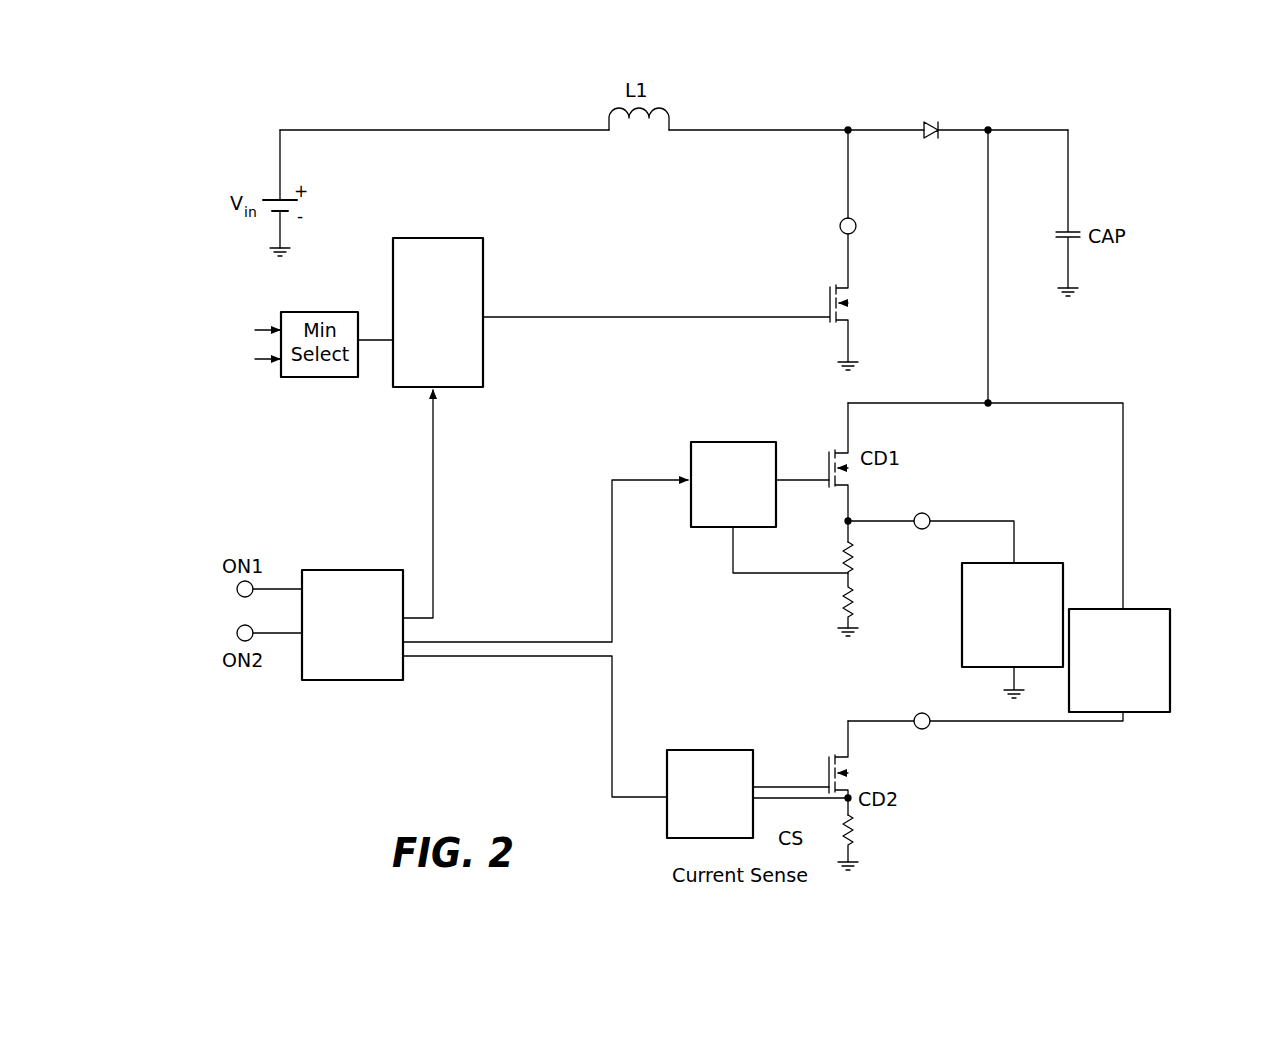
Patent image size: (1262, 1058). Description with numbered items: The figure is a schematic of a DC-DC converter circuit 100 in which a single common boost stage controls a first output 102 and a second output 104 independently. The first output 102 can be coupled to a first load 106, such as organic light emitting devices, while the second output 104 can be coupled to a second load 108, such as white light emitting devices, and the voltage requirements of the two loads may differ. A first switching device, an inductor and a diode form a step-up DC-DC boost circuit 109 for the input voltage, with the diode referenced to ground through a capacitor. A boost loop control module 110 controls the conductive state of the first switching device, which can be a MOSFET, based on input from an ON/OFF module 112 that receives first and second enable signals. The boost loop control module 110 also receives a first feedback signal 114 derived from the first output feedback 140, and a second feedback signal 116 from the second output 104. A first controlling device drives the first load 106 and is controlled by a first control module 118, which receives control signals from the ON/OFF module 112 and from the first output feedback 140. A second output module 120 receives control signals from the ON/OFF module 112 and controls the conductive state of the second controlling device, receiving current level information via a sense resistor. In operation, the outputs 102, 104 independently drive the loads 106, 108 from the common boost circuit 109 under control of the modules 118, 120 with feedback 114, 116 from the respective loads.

The DC-DC converter circuit 100 is at (1160, 170).
The first output 102 is at (922, 530).
The second output 104 is at (915, 713).
The first load 106 is at (1045, 563).
The second load 108 is at (1170, 657).
The step-up DC-DC boost circuit 109 is at (775, 246).
The boost loop control module 110 is at (434, 238).
The ON/OFF module 112 is at (345, 570).
The first feedback signal 114 is at (262, 326).
The second feedback signal 116 is at (256, 362).
The first control module 118 is at (733, 442).
The second output module 120 is at (700, 750).
The first output feedback FB1 140 is at (773, 577).